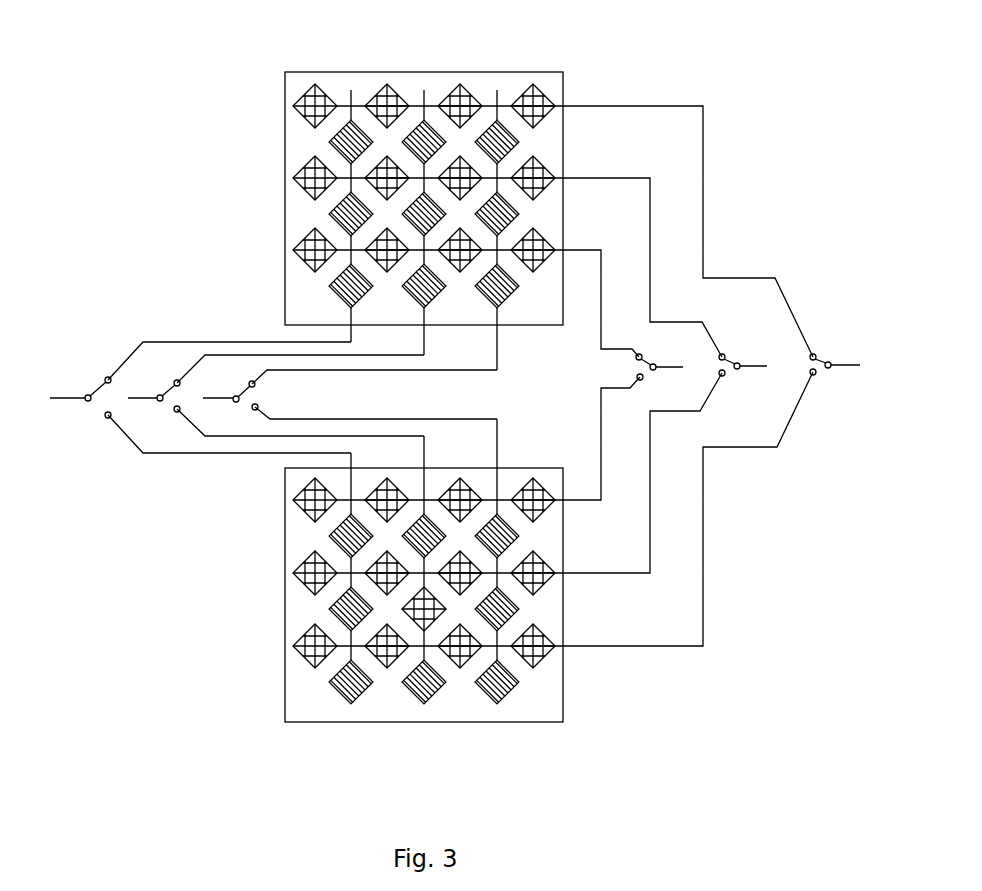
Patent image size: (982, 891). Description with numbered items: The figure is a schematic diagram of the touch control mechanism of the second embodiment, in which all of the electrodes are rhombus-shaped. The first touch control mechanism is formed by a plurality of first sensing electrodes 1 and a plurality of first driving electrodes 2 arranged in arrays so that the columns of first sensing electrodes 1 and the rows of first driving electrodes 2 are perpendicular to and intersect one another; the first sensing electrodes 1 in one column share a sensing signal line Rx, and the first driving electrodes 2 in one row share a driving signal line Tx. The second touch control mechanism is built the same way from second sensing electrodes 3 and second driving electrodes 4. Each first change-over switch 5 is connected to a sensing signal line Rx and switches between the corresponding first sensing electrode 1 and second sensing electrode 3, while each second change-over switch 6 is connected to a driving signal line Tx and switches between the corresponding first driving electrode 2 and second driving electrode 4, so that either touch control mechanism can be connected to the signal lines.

The first sensing electrode 1 is at (500, 130).
The first driving electrode 2 is at (310, 98).
The second sensing electrode 3 is at (350, 690).
The second driving electrode 4 is at (533, 663).
The first change-over switch 5 is at (95, 410).
The second change-over switch 6 is at (828, 380).